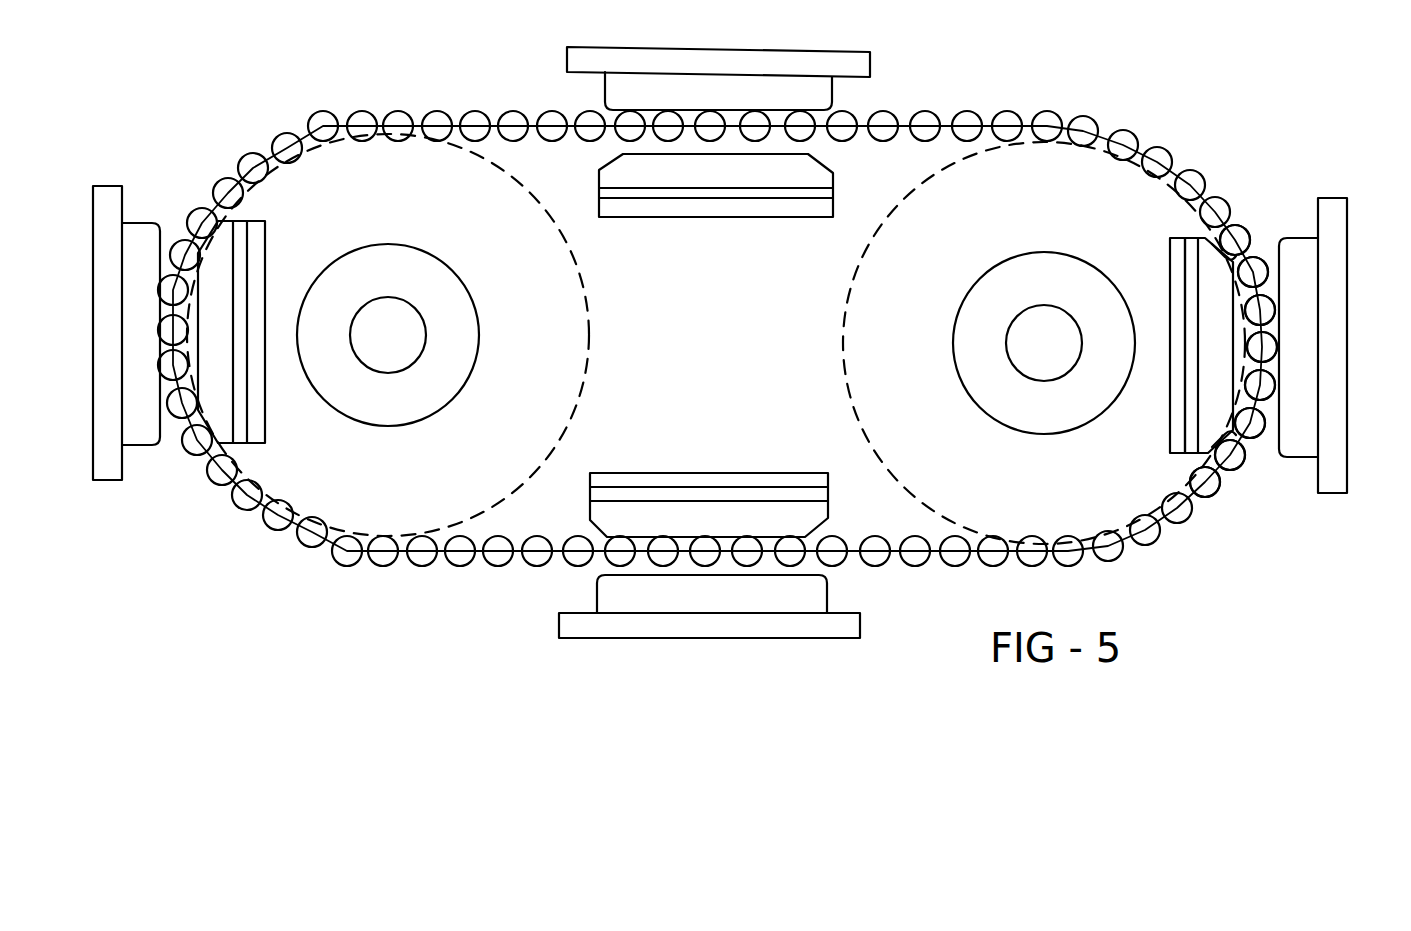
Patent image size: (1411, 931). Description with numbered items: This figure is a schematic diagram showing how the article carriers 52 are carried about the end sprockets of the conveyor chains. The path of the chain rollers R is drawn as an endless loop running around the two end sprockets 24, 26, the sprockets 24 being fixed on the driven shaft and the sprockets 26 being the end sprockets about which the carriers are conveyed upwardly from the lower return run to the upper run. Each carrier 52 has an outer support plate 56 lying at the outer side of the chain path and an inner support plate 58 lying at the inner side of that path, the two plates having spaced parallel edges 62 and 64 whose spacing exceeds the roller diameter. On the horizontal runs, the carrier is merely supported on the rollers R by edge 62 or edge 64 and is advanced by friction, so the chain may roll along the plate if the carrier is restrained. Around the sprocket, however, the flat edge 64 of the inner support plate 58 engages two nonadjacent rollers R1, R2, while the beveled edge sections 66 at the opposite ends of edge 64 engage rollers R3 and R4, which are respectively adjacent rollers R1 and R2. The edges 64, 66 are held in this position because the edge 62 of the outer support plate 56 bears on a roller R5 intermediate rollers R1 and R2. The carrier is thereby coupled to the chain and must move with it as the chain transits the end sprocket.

The sprocket 24 is at (850, 276).
The sprocket 26 is at (591, 345).
The article carrier 52 is at (856, 28).
The outer support plate 56 is at (834, 92).
The inner support plate 58 is at (836, 176).
The edge of outer support plate 62 is at (1273, 370).
The flat edge of inner support plate 64 is at (1240, 343).
The beveled edge section 66 is at (1222, 242).
The roller R is at (1272, 310).
The roller R1 is at (1262, 270).
The roller R2 is at (1252, 432).
The roller R3 is at (1234, 238).
The roller R4 is at (1232, 465).
The roller R5 is at (1272, 348).